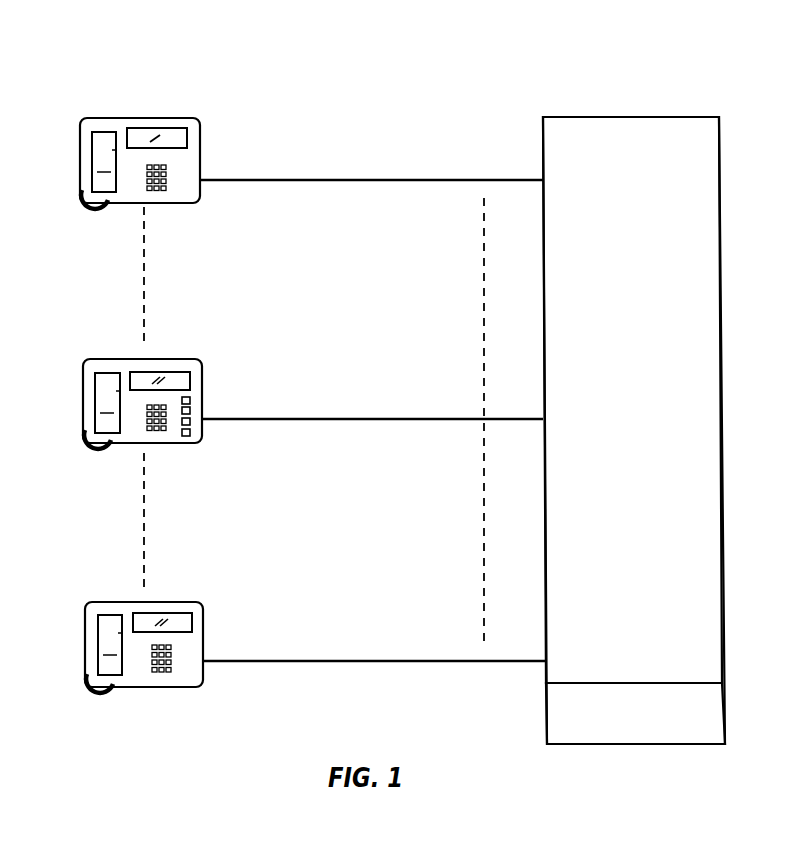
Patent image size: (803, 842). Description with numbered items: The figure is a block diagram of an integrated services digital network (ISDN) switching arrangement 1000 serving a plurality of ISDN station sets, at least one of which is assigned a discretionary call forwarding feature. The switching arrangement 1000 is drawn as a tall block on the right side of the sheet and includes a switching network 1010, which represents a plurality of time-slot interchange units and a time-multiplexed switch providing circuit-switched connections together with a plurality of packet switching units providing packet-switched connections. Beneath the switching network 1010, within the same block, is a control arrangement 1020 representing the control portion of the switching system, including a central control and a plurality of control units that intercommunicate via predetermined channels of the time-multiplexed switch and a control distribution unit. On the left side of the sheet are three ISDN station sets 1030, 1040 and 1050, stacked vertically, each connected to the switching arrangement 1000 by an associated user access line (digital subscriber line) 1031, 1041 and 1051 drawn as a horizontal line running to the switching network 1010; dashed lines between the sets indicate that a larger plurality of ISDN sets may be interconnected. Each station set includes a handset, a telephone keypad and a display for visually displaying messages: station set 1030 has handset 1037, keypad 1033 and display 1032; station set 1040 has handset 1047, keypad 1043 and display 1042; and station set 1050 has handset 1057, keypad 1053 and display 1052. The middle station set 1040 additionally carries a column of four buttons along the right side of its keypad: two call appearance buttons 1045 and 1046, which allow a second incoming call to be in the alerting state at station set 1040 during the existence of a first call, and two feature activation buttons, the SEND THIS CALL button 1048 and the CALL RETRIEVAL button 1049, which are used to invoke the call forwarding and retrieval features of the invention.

The ISDN switching arrangement 1000 is at (658, 113).
The switching network 1010 is at (719, 424).
The control arrangement 1020 is at (722, 716).
The ISDN station set 1030 is at (135, 601).
The user access line 1031 is at (372, 659).
The display 1032 is at (184, 622).
The keypad 1033 is at (160, 676).
The handset 1037 is at (104, 644).
The ISDN station set 1040 is at (133, 358).
The user access line 1041 is at (369, 417).
The display 1042 is at (182, 380).
The keypad 1043 is at (158, 436).
The call appearance button 1045 is at (190, 399).
The call appearance button 1046 is at (190, 411).
The handset 1047 is at (101, 404).
The SEND THIS CALL feature activation button 1048 is at (190, 423).
The CALL RETRIEVAL feature activation button 1049 is at (192, 435).
The ISDN station set 1050 is at (135, 117).
The user access line 1051 is at (362, 177).
The display 1052 is at (172, 134).
The keypad 1053 is at (156, 195).
The handset 1057 is at (98, 162).